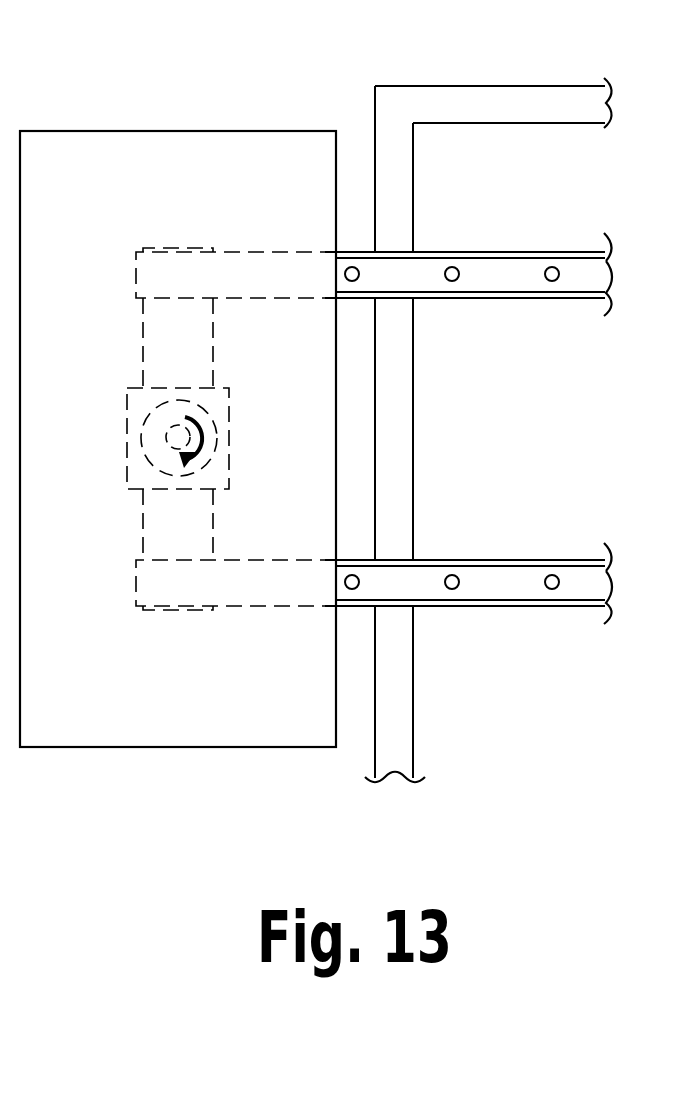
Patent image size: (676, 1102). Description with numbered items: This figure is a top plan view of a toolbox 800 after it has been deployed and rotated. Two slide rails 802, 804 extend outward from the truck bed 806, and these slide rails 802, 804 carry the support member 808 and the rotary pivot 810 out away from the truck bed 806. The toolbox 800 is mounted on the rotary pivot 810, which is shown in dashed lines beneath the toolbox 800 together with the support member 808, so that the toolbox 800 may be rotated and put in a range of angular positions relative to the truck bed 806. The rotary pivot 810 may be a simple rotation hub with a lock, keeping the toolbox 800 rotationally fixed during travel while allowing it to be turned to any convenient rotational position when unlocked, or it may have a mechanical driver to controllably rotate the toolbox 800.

The toolbox 800 is at (178, 130).
The slide rail 802 is at (557, 299).
The slide rail 804 is at (558, 560).
The truck bed 806 is at (520, 86).
The support member 808 is at (132, 433).
The rotary pivot 810 is at (127, 478).